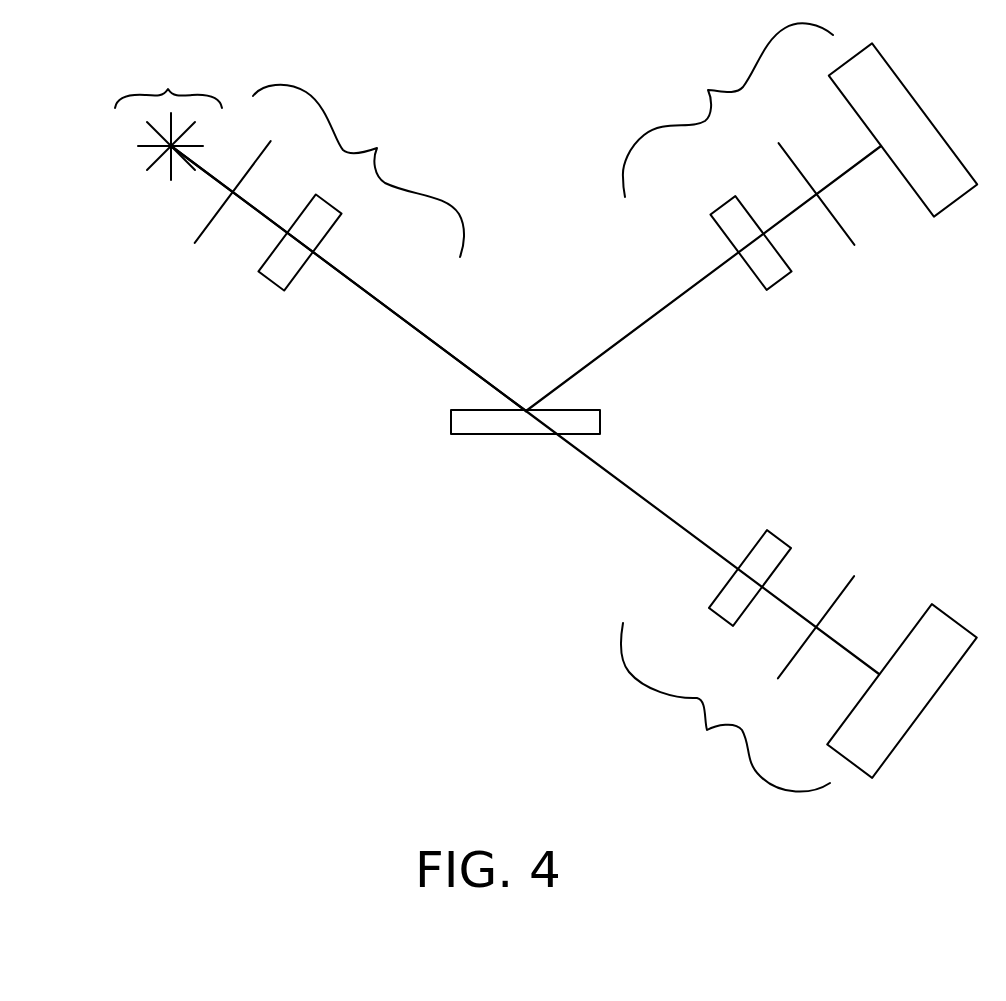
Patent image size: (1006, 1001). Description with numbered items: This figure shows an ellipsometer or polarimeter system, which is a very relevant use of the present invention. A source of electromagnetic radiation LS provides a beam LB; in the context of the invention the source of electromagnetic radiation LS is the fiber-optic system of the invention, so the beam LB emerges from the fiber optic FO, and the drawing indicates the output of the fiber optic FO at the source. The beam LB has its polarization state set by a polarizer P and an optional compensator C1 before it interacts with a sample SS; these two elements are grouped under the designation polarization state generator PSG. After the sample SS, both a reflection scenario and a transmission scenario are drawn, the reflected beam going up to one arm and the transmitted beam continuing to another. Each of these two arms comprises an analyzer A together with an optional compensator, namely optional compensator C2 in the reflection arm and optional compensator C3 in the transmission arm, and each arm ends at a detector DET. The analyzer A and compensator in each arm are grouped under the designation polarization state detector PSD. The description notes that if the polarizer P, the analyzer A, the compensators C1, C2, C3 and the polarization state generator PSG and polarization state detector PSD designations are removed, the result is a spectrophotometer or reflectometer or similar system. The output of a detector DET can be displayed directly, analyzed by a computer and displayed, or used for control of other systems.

The source of electromagnetic radiation LS is at (136, 146).
The fiber optic FO is at (166, 64).
The beam LB is at (212, 177).
The polarizer P is at (244, 185).
The optional compensator C1 is at (299, 267).
The polarization state generator PSG is at (358, 171).
The sample SS is at (525, 446).
The optional compensator C2 is at (739, 230).
The optional compensator C3 is at (752, 556).
The analyzer A is at (830, 410).
The detector DET is at (911, 410).
The polarization state detector PSD is at (727, 407).